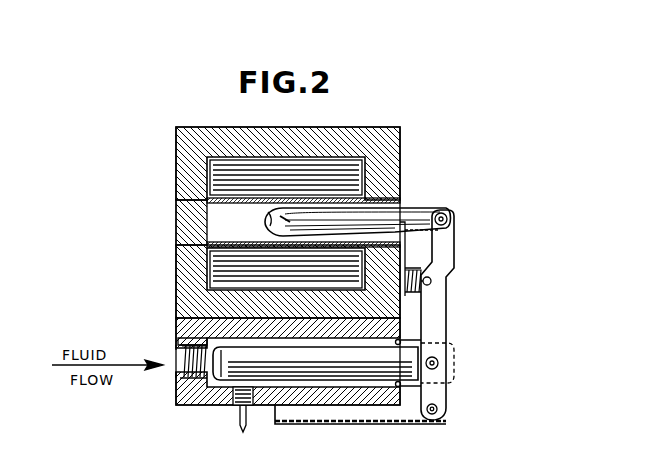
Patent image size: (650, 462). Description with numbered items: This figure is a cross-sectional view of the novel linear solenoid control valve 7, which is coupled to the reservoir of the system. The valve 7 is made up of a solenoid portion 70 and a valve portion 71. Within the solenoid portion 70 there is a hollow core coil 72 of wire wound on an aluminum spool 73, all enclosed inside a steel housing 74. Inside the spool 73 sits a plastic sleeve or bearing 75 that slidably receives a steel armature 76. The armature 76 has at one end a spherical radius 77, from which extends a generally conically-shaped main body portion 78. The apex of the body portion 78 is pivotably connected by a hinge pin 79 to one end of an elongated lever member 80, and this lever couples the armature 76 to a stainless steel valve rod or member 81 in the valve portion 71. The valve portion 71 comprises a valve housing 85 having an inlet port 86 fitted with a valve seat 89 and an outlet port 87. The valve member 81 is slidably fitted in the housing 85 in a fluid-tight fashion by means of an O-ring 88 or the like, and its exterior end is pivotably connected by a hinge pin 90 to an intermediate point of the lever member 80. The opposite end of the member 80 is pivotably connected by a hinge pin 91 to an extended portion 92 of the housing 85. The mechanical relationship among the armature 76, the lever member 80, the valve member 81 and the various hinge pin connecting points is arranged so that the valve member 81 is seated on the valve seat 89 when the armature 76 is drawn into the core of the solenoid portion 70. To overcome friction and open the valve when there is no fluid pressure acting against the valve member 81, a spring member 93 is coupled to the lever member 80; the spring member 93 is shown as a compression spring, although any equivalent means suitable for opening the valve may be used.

The linear solenoid control valve 7 is at (408, 126).
The solenoid portion 70 is at (176, 209).
The valve portion 71 is at (178, 400).
The hollow core coil 72 is at (192, 286).
The aluminum spool 73 is at (190, 257).
The steel housing 74 is at (400, 178).
The plastic sleeve 75 is at (268, 240).
The steel armature 76 is at (422, 205).
The spherical radius 77 is at (268, 216).
The main body portion 78 is at (404, 226).
The hinge pin 79 is at (448, 216).
The lever member 80 is at (455, 254).
The valve rod 81 is at (222, 357).
The valve housing 85 is at (228, 405).
The inlet port 86 is at (183, 370).
The outlet port 87 is at (250, 407).
The O-ring 88 is at (403, 341).
The valve seat 89 is at (182, 338).
The hinge pin 90 is at (439, 361).
The hinge pin 91 is at (437, 407).
The extended portion 92 is at (400, 426).
The spring member 93 is at (431, 280).